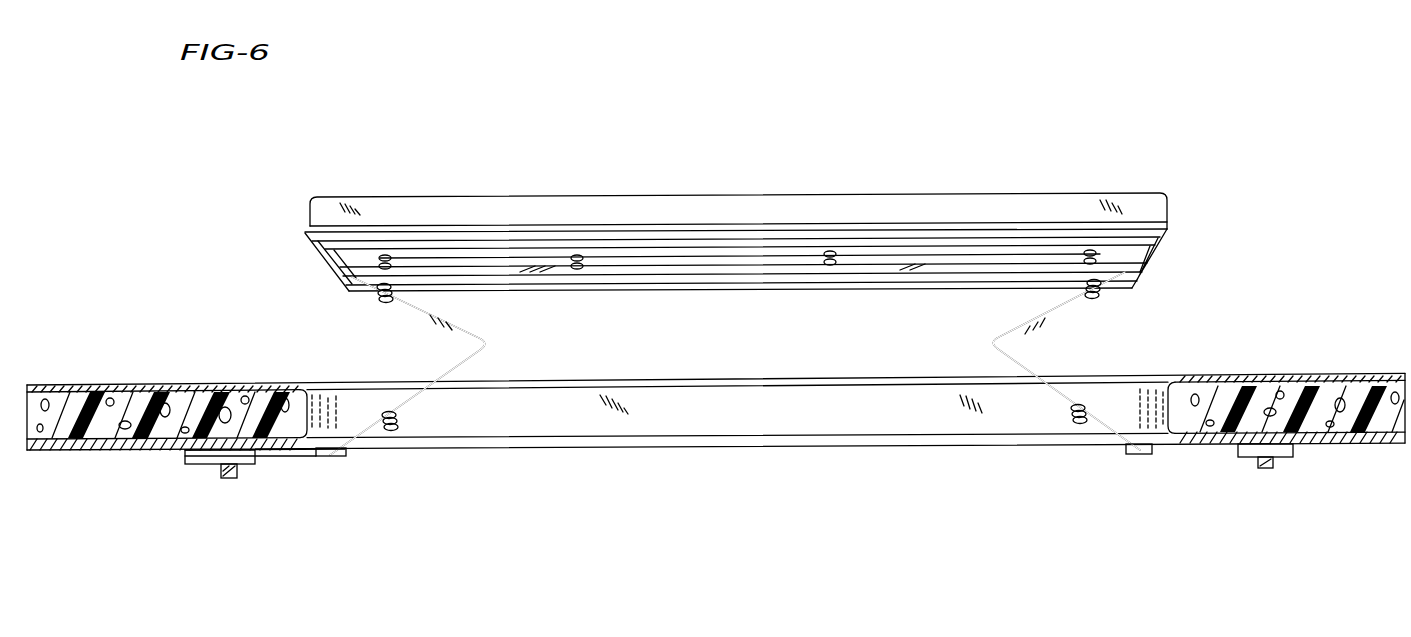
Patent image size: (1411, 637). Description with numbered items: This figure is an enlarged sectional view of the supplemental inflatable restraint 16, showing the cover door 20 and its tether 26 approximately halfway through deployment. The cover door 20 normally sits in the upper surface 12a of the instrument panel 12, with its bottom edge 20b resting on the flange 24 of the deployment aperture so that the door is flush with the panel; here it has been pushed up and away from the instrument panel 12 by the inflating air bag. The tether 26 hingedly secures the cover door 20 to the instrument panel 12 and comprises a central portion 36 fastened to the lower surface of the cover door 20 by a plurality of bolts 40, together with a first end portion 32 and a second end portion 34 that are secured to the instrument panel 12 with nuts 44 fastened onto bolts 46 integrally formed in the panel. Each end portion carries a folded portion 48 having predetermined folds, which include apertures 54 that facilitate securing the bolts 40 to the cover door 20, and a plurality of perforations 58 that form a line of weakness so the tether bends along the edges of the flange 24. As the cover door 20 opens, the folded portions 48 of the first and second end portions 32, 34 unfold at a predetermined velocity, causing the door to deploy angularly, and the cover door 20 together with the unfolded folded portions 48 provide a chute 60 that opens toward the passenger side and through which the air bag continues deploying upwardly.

The instrument panel 12 is at (716, 396).
The upper surface of instrument panel 12a is at (1298, 374).
The supplemental inflatable restraint 16 is at (793, 201).
The cover door 20 is at (1139, 191).
The bottom edge of cover door 20b is at (1150, 259).
The flange 24 is at (710, 433).
The tether 26 is at (862, 250).
The first end portion 32 is at (1292, 448).
The second end portion 34 is at (260, 458).
The central portion 36 is at (737, 262).
The bolts 40 is at (826, 258).
The nuts 44 is at (208, 464).
The bolts 46 is at (229, 480).
The folded portion 48 is at (445, 378).
The apertures 54 is at (386, 416).
The perforations 58 is at (345, 458).
The chute 60 is at (632, 332).